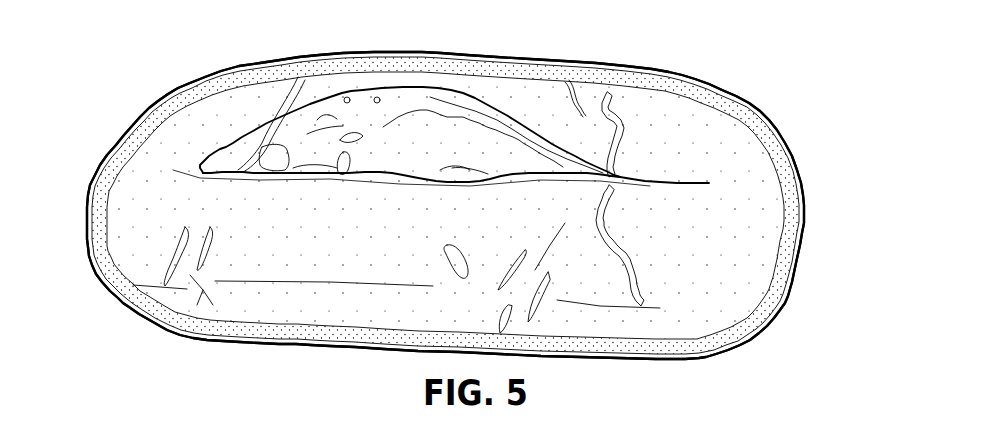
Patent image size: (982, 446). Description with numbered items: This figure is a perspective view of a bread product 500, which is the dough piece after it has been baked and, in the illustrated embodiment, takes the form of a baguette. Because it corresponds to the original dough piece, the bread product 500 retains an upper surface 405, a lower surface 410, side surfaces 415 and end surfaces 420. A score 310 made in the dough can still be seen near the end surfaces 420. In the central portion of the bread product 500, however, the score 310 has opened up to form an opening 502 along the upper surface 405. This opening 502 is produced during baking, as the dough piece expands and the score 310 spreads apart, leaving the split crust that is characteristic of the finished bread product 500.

The bread product 500 is at (163, 67).
The score 310 is at (200, 163).
The opening 502 is at (423, 88).
The upper surface 405 is at (592, 87).
The lower surface 410 is at (805, 221).
The side surfaces 415 is at (767, 117).
The end surfaces 420 is at (88, 200).